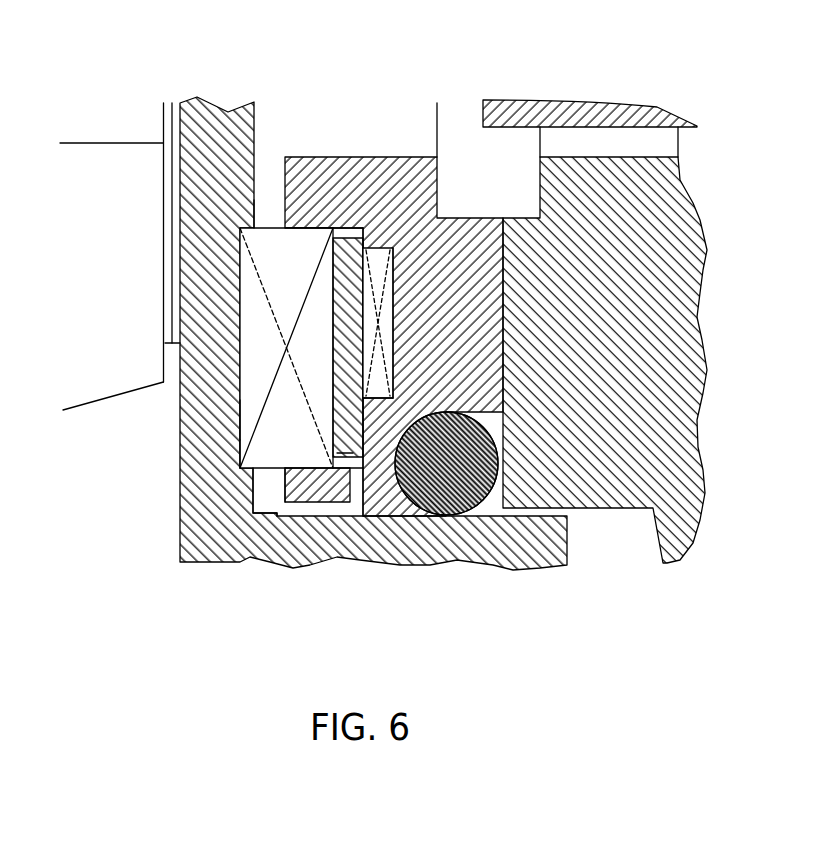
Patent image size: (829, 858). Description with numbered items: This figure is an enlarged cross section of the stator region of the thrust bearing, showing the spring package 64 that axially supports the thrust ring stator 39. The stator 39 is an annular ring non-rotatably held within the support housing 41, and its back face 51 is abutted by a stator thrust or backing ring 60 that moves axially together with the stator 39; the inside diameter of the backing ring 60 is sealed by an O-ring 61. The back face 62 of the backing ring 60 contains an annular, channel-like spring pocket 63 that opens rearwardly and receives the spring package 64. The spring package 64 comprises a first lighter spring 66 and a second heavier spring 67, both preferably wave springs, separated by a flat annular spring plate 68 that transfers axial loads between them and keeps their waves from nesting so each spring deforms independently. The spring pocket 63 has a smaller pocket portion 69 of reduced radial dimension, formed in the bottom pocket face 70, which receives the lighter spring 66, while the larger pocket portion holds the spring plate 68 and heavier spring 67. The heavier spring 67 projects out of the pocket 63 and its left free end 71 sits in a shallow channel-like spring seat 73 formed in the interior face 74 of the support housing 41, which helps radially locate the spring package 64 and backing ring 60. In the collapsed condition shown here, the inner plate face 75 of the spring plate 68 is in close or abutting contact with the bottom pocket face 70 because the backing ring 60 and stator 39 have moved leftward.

The thrust ring stator 39 is at (617, 158).
The support housing 41 is at (194, 135).
The back face 51 is at (505, 313).
The backing ring 60 is at (326, 160).
The O-ring 61 is at (453, 517).
The back face 62 is at (284, 489).
The spring pocket 63 is at (352, 228).
The spring package 64 is at (226, 331).
The first lighter spring 66 is at (397, 232).
The second heavier spring 67 is at (247, 420).
The spring plate 68 is at (345, 445).
The smaller pocket portion 69 is at (378, 400).
The bottom pocket face 70 is at (302, 228).
The left free end 71 is at (240, 458).
The spring seat 73 is at (252, 217).
The interior face 74 is at (255, 122).
The inner plate face 75 is at (393, 248).